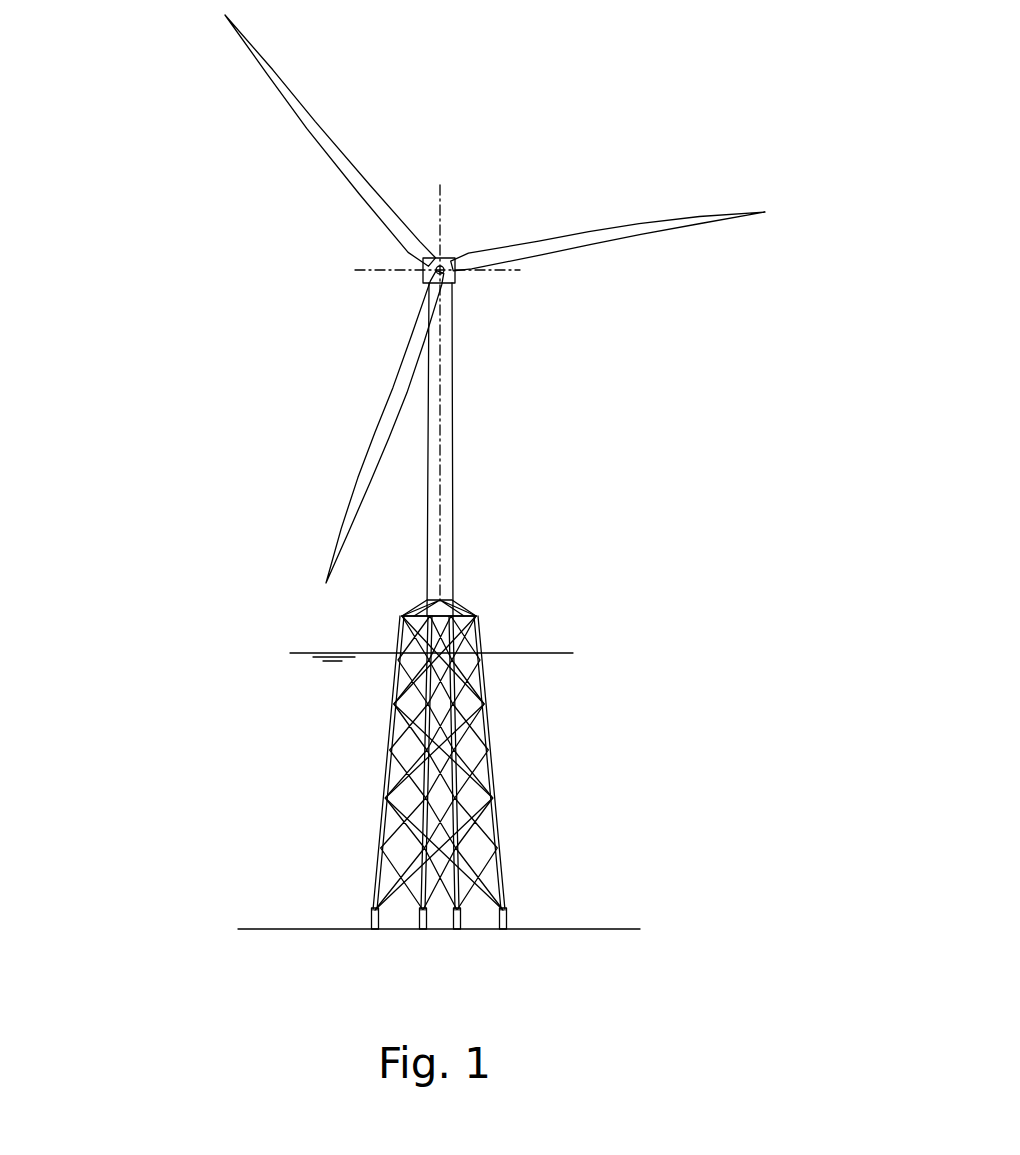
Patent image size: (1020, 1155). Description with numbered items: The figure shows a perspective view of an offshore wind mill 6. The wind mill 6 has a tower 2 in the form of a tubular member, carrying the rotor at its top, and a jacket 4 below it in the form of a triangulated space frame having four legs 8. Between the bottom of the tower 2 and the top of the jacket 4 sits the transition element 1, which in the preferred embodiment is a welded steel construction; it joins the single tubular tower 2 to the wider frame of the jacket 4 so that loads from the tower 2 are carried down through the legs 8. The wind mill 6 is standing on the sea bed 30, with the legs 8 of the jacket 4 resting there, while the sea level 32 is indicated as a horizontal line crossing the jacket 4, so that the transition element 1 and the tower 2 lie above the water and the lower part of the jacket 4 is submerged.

The transition element 1 is at (470, 598).
The tower 2 is at (453, 449).
The jacket 4 is at (495, 758).
The wind mill 6 is at (386, 340).
The legs 8 is at (392, 757).
The sea bed 30 is at (570, 927).
The sea level 32 is at (553, 651).